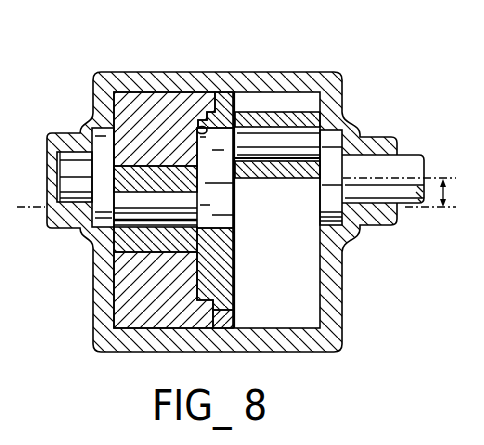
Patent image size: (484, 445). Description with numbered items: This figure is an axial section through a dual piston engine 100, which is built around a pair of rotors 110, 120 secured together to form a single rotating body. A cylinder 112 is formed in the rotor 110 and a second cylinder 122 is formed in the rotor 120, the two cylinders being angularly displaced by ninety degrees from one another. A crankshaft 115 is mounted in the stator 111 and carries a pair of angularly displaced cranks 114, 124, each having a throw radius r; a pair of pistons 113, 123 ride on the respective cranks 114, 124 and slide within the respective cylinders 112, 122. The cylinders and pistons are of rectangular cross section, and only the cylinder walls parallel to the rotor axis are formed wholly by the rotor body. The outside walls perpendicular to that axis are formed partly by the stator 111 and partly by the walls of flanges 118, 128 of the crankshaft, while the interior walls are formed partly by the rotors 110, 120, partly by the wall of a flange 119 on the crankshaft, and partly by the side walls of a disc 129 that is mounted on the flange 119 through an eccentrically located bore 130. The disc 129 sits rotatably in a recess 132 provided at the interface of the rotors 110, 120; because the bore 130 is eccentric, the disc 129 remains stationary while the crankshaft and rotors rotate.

The dual piston engine 100 is at (219, 54).
The rotor 110 is at (218, 98).
The stator 111 is at (100, 72).
The cylinder 112 is at (320, 307).
The piston 113 is at (289, 112).
The crank 114 is at (307, 138).
The crankshaft 115 is at (405, 165).
The flange 118 is at (335, 140).
The flange 119 is at (320, 210).
The rotor 120 is at (137, 98).
The cylinder 122 is at (197, 240).
The piston 123 is at (115, 250).
The crank 124 is at (100, 242).
The flange 128 is at (100, 147).
The disc 129 is at (227, 268).
The bore 130 is at (194, 123).
The recess 132 is at (213, 310).